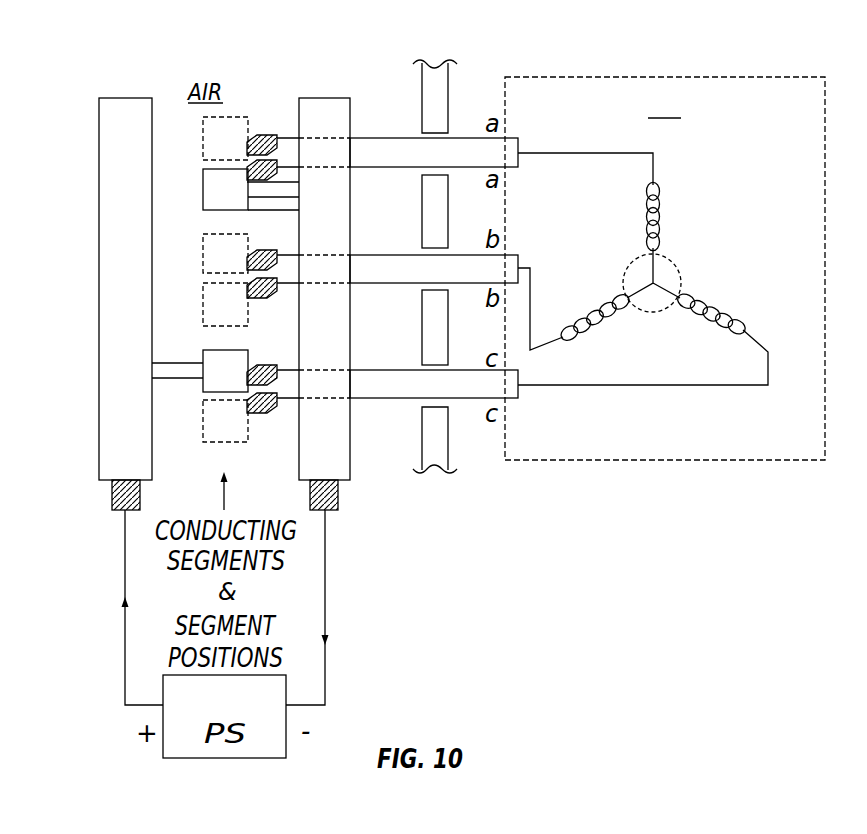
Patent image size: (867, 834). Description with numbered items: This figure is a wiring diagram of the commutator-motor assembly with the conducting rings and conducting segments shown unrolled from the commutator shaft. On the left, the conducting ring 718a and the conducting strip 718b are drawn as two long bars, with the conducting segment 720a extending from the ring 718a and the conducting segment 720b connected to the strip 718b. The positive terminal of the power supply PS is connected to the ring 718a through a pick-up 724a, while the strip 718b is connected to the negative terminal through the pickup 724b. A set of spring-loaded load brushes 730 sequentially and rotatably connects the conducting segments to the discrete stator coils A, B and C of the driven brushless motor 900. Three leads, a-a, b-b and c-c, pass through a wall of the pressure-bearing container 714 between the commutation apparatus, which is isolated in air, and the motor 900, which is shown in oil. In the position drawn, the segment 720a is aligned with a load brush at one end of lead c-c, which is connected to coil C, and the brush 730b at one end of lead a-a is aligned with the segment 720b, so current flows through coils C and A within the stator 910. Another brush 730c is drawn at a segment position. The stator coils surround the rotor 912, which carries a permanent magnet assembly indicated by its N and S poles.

The conducting ring 718a is at (120, 88).
The conducting strip 718b is at (327, 88).
The conducting segment 720a is at (203, 356).
The conducting segment 720b is at (203, 195).
The brush 730 is at (272, 124).
The brush 730b is at (278, 165).
The brush 730c is at (278, 368).
The container 714 is at (430, 50).
The pick-up 724a is at (114, 521).
The pickup 724b is at (332, 521).
The brushless motor 900 is at (665, 461).
The stator 910 is at (696, 214).
The rotor 912 is at (654, 313).